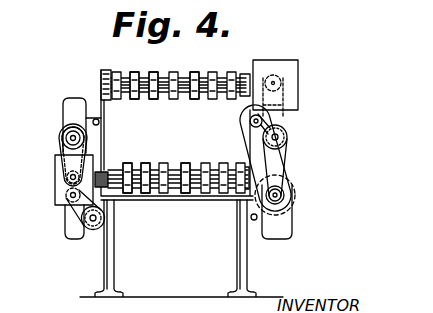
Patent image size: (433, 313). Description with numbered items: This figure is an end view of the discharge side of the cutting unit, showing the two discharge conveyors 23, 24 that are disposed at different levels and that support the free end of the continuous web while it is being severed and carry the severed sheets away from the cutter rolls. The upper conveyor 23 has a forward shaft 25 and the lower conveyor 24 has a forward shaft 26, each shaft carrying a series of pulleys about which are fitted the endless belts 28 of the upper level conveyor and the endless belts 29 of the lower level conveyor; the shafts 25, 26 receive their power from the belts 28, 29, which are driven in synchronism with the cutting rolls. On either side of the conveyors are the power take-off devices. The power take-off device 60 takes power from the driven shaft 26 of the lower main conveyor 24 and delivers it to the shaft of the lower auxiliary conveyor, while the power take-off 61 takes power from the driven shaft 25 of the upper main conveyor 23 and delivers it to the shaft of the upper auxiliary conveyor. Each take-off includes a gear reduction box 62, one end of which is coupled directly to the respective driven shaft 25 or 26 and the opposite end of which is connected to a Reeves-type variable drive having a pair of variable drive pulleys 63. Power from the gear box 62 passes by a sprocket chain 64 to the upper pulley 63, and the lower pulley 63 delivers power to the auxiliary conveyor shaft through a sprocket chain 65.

The discharge conveyor 23 is at (112, 70).
The discharge conveyor 24 is at (145, 195).
The forward shaft 25 is at (193, 78).
The forward shaft 26 is at (178, 165).
The endless belts 28 is at (153, 100).
The endless belts 29 is at (144, 163).
The power take-off device 60 is at (58, 150).
The power take-off 61 is at (294, 149).
The gear reduction box 62 is at (57, 178).
The variable drive pulleys 63 is at (61, 136).
The sprocket chain 64 is at (287, 116).
The sprocket chain 65 is at (284, 176).